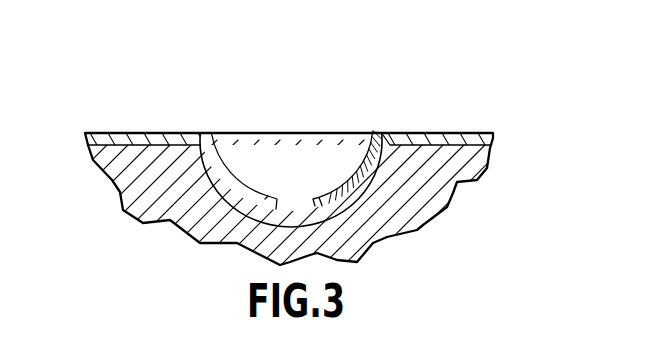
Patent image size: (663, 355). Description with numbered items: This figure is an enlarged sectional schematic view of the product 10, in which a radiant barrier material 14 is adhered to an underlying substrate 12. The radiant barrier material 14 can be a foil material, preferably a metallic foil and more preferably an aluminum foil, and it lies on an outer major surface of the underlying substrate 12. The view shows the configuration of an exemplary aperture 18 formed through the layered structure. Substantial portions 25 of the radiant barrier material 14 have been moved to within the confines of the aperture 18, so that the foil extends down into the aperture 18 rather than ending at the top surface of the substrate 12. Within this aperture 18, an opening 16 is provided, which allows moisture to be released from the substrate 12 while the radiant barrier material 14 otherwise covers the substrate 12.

The product 10 is at (308, 149).
The underlying substrate 12 is at (447, 198).
The radiant barrier material 14 is at (424, 133).
The opening 16 is at (294, 206).
The aperture 18 is at (357, 193).
The portions of radiant barrier material 25 is at (325, 192).